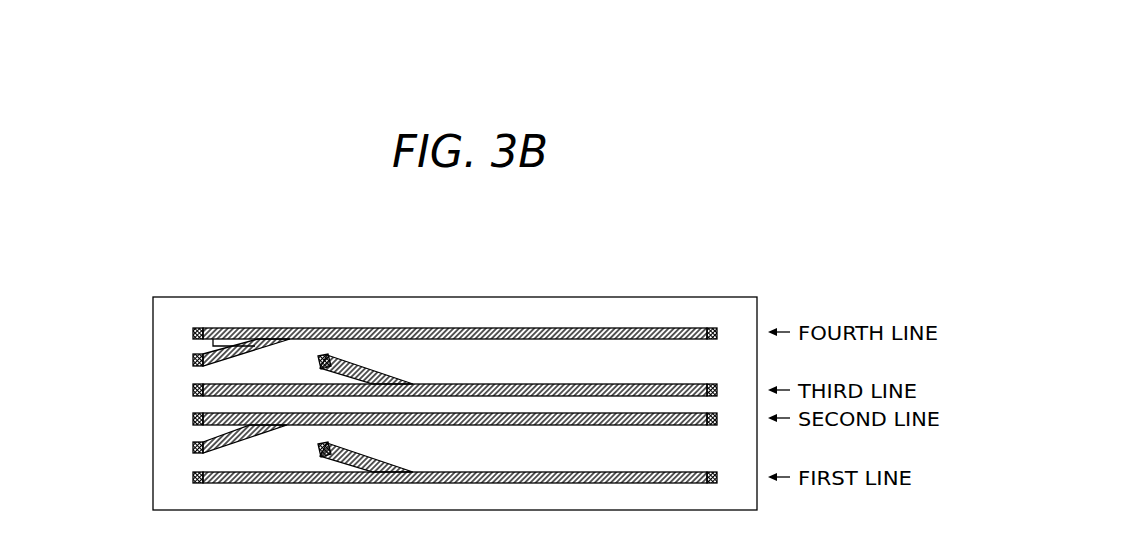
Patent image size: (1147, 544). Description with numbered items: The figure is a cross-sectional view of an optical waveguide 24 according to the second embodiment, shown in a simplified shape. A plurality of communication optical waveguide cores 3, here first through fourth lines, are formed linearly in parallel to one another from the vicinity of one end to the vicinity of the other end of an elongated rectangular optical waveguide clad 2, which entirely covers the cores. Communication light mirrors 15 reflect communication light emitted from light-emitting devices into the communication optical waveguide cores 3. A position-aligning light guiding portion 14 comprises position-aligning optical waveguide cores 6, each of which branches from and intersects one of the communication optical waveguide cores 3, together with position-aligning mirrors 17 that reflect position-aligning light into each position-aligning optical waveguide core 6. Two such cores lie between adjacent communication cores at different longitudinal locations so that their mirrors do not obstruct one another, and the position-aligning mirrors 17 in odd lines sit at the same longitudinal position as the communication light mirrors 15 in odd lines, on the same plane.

The optical waveguide 24 is at (141, 277).
The optical waveguide clad 2 is at (482, 297).
The communication optical waveguide core 3 is at (536, 328).
The communication light mirror 15 is at (199, 328).
The position-aligning light guiding portion 14 is at (266, 357).
The position-aligning mirror 17 is at (326, 355).
The position-aligning optical waveguide core 6 is at (217, 365).